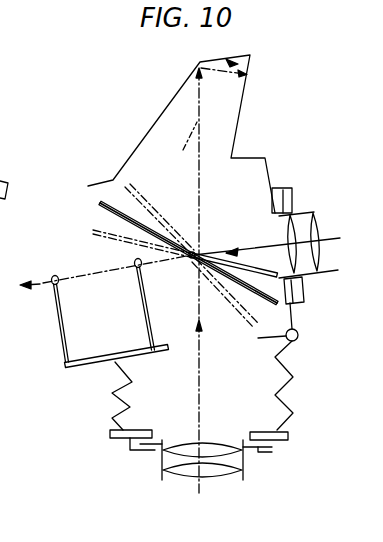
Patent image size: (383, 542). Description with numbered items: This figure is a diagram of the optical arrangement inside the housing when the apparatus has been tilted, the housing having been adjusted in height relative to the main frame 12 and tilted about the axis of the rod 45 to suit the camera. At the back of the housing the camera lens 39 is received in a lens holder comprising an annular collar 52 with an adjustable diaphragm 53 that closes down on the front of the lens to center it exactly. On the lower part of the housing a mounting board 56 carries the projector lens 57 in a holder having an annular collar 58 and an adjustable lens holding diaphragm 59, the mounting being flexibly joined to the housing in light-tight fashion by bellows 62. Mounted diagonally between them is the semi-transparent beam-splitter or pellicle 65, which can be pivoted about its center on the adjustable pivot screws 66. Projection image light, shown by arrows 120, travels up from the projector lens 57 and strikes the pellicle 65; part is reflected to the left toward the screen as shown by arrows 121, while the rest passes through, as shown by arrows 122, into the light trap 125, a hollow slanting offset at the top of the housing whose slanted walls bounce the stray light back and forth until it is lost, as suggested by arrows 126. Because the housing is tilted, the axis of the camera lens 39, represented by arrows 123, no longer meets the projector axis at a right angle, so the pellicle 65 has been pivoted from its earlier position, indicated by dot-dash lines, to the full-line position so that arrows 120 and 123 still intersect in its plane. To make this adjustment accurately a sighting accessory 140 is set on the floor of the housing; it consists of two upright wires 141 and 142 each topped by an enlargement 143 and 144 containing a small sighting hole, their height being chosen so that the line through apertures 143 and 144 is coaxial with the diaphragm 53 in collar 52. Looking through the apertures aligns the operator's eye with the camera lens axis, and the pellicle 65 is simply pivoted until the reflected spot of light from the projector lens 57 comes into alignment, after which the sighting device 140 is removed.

The main frame 12 is at (8, 186).
The camera lens 39 is at (318, 215).
The rod 45 is at (298, 334).
The annular collar 52 is at (276, 190).
The adjustable diaphragm 53 is at (283, 198).
The mounting board 56 is at (285, 432).
The projector lens 57 is at (243, 478).
The annular collar 58 is at (275, 448).
The adjustable lens holding diaphragm 59 is at (258, 453).
The bellows 62 is at (293, 377).
The beam-splitter or pellicle 65 is at (100, 205).
The pivot screws 66 is at (190, 250).
The arrows 120 is at (203, 348).
The arrows 121 is at (33, 292).
The arrows 122 is at (176, 143).
The arrows 123 is at (256, 240).
The light trap 125 is at (245, 101).
The arrows 126 is at (246, 66).
The sighting accessory 140 is at (77, 366).
The upright wire 141 is at (62, 327).
The upright wire 142 is at (145, 322).
The enlargement with sighting aperture 143 is at (58, 258).
The enlargement with sighting aperture 144 is at (136, 259).